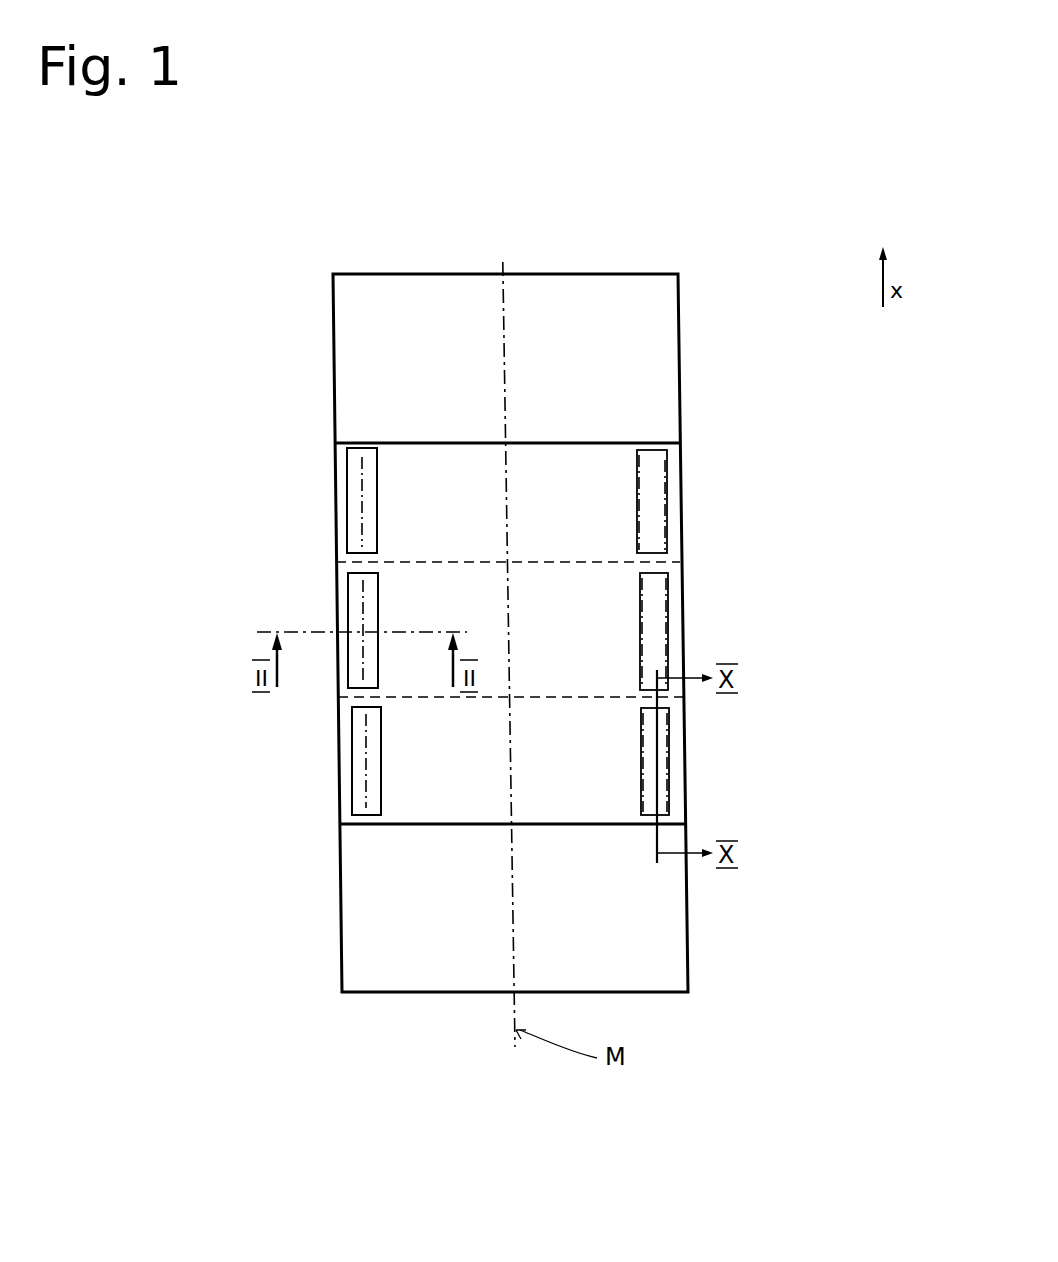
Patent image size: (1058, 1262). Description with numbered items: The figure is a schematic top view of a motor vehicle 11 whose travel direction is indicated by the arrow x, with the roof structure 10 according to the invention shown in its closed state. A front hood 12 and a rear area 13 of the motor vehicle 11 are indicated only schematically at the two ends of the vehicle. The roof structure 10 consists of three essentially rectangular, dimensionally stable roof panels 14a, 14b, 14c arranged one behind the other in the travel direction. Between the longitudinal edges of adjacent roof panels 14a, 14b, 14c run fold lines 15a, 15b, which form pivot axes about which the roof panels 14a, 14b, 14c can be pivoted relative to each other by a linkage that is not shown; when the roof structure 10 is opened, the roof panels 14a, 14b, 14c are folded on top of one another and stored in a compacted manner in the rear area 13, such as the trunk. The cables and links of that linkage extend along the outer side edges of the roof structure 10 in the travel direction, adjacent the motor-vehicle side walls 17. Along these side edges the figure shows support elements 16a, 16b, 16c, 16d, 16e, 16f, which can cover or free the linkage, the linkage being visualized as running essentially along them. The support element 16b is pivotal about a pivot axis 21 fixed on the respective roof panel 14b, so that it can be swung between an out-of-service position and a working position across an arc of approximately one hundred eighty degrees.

The roof structure 10 is at (712, 531).
The motor vehicle 11 is at (687, 209).
The front hood 12 is at (407, 295).
The rear area 13 is at (440, 933).
The roof panel 14a is at (343, 457).
The roof panel 14b is at (343, 590).
The roof panel 14c is at (350, 733).
The fold line 15a is at (592, 562).
The fold line 15b is at (595, 698).
The support element 16a is at (357, 502).
The support element 16b is at (362, 618).
The support element 16c is at (366, 782).
The support element 16d is at (648, 467).
The support element 16e is at (648, 593).
The support element 16f is at (662, 728).
The motor-vehicle side wall 17 is at (333, 687).
The pivot axis 21 is at (379, 622).